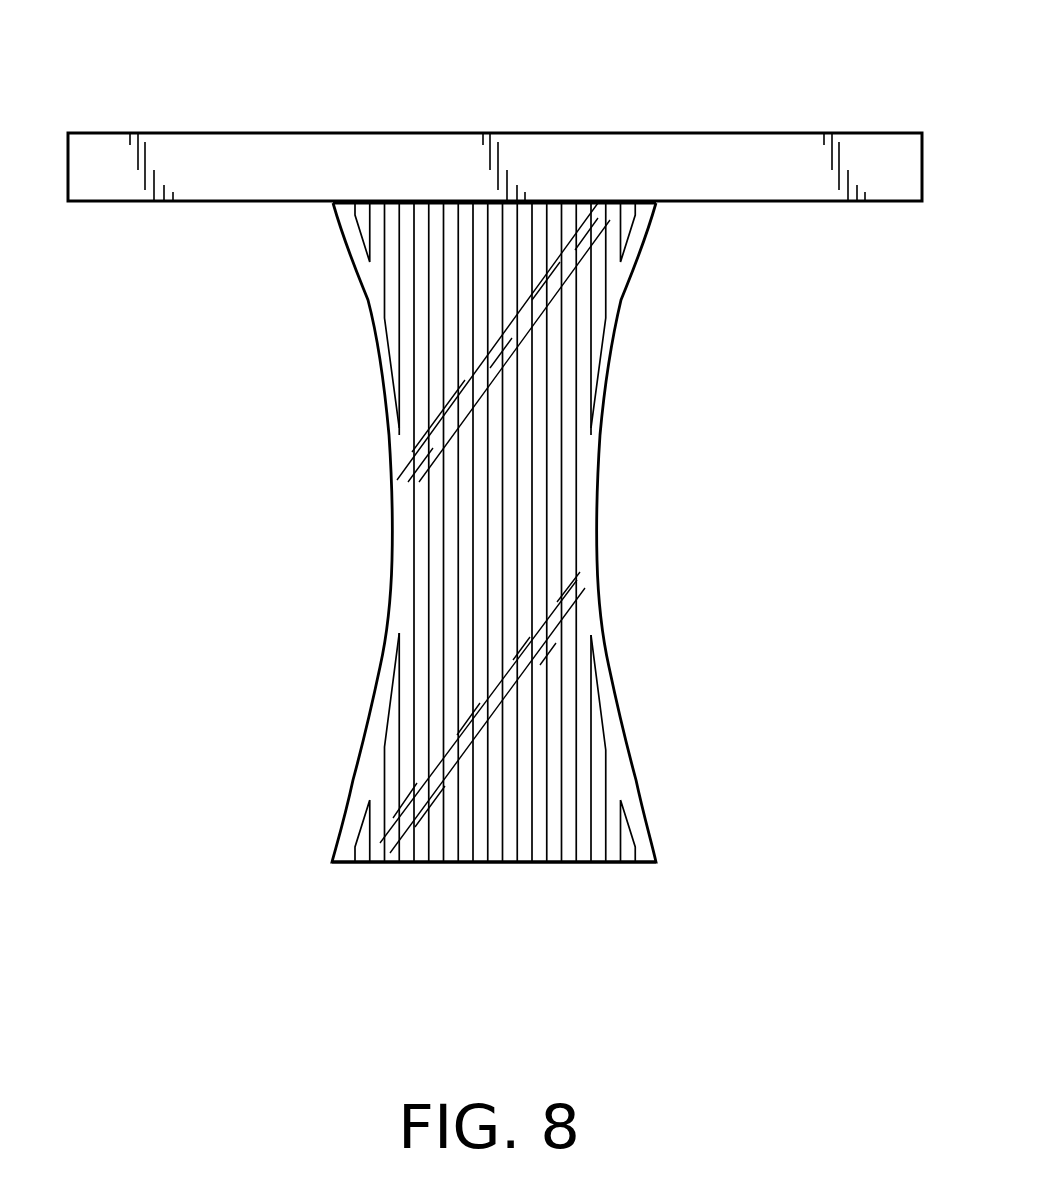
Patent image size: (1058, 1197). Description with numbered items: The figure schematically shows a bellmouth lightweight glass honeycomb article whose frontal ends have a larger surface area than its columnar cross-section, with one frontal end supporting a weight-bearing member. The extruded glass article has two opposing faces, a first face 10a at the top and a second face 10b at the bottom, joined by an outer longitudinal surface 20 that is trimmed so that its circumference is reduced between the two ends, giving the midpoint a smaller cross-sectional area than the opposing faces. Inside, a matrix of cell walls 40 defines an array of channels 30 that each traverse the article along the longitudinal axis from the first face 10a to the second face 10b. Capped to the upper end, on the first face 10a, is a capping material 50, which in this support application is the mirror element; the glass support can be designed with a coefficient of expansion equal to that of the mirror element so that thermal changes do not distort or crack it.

The capping material 50 is at (762, 133).
The outer longitudinal surface 20 is at (607, 656).
The channels 30 is at (570, 457).
The cell walls 40 is at (592, 302).
The first face 10a is at (485, 203).
The second face 10b is at (405, 863).